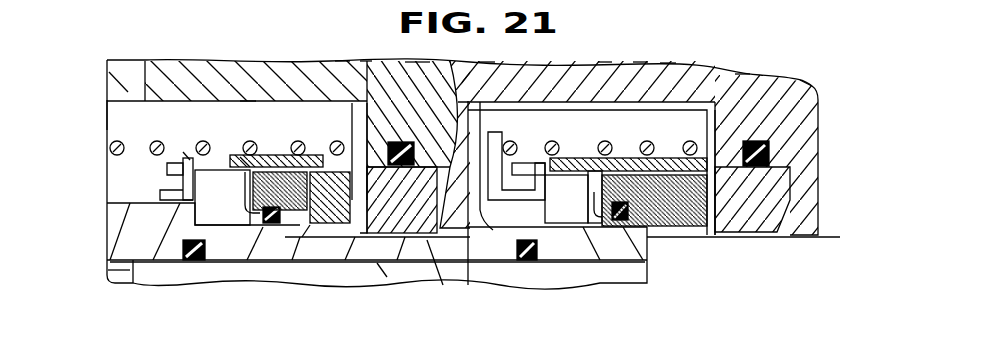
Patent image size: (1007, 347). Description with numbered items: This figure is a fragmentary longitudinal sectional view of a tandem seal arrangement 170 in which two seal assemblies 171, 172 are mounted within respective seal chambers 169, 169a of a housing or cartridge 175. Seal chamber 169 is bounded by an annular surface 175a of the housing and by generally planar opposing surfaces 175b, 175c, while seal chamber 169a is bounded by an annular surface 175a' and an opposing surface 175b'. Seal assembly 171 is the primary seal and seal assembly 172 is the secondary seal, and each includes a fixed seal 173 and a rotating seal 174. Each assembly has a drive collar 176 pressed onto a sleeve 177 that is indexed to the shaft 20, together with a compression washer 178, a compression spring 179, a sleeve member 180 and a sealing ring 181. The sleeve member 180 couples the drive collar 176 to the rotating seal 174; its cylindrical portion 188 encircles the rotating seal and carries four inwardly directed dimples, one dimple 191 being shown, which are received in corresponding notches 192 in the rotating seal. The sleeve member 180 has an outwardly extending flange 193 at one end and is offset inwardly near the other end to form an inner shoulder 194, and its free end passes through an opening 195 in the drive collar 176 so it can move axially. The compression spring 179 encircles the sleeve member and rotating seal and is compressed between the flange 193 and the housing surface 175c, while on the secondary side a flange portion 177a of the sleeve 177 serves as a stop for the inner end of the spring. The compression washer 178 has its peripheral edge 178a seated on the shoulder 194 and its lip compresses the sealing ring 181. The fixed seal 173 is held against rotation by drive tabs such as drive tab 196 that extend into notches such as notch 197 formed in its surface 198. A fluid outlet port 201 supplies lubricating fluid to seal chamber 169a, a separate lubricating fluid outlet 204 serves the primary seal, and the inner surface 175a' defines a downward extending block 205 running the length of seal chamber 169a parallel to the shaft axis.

The shaft 20 is at (108, 272).
The seal chamber 169 is at (248, 120).
The seal chamber 169a is at (668, 62).
The tandem seal arrangement 170 is at (832, 112).
The seal assembly 171 is at (337, 289).
The seal assembly 172 is at (626, 290).
The fixed seal 173 is at (752, 238).
The rotating seal 174 is at (690, 258).
The housing or cartridge 175 is at (606, 62).
The annular surface 175a is at (180, 68).
The opposing surface 175b is at (436, 49).
The opposing surface 175c is at (105, 120).
The annular surface 175a' is at (775, 71).
The opposing surface 175b' is at (839, 75).
The drive collar 176 is at (158, 192).
The sleeve 177 is at (107, 232).
The flange portion 177a is at (492, 132).
The compression washer 178 is at (245, 212).
The peripheral edge 178a is at (222, 197).
The compression spring 179 is at (110, 142).
The sleeve member 180 is at (278, 155).
The sealing ring 181 is at (262, 232).
The cylindrical portion 188 is at (300, 170).
The dimple 191 is at (340, 62).
The notch 192 is at (283, 268).
The flange 193 is at (348, 75).
The inner shoulder 194 is at (243, 157).
The opening 195 is at (185, 152).
The drive tab 196 is at (468, 285).
The notch 197 is at (440, 278).
The surface 198 is at (483, 62).
The fluid outlet port 201 is at (640, 62).
The lubricating fluid outlet 204 is at (366, 58).
The downward extending block 205 is at (588, 49).